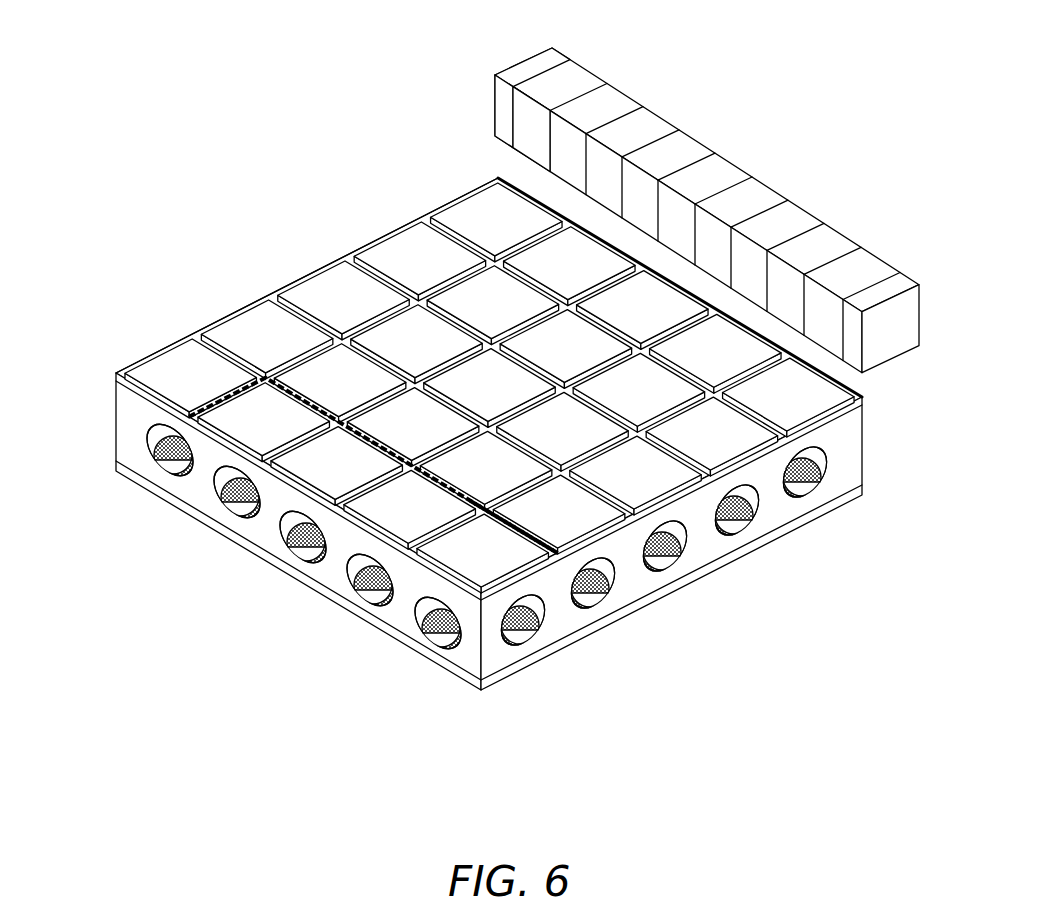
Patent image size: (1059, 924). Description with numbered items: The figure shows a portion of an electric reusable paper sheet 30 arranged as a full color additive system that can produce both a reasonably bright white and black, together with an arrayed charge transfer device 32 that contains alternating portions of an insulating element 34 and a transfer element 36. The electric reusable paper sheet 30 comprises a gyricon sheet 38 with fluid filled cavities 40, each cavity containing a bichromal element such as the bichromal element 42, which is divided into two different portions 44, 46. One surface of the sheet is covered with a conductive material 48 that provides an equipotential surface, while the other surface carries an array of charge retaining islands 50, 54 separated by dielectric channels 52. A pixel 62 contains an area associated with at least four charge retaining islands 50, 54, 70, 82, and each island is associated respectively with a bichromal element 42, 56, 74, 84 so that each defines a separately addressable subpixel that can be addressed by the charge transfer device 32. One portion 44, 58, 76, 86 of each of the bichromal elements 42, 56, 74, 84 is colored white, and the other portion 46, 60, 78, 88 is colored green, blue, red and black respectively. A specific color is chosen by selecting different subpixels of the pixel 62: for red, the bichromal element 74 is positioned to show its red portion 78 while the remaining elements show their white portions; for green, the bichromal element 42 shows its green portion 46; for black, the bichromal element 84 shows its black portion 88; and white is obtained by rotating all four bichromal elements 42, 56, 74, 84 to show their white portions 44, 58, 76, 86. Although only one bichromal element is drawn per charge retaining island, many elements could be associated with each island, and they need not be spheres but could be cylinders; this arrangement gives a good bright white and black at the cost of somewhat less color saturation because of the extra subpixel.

The electric reusable paper sheet 30 is at (462, 453).
The arrayed charge transfer device 32 is at (667, 200).
The insulating element 34 is at (500, 100).
The transfer element 36 is at (528, 170).
The gyricon sheet 38 is at (133, 413).
The fluid filled cavity 40 is at (512, 640).
The bichromal element 42 is at (334, 610).
The white portion of bichromal element 44 is at (373, 606).
The green portion of bichromal element 46 is at (351, 610).
The conductive material 48 is at (720, 612).
The charge retaining island 50 is at (399, 521).
The dielectric channel 52 is at (458, 530).
The charge retaining island 54 is at (323, 474).
The bichromal element 56 is at (264, 561).
The white portion of bichromal element 58 is at (305, 548).
The blue portion of bichromal element 60 is at (281, 561).
The pixel 62 is at (333, 421).
The charge retaining island 70 is at (248, 427).
The bichromal element 74 is at (203, 519).
The white portion of bichromal element 76 is at (236, 508).
The red portion of bichromal element 78 is at (188, 519).
The charge retaining island 82 is at (472, 567).
The bichromal element 84 is at (407, 659).
The white portion of bichromal element 86 is at (423, 659).
The black portion of bichromal element 88 is at (453, 650).